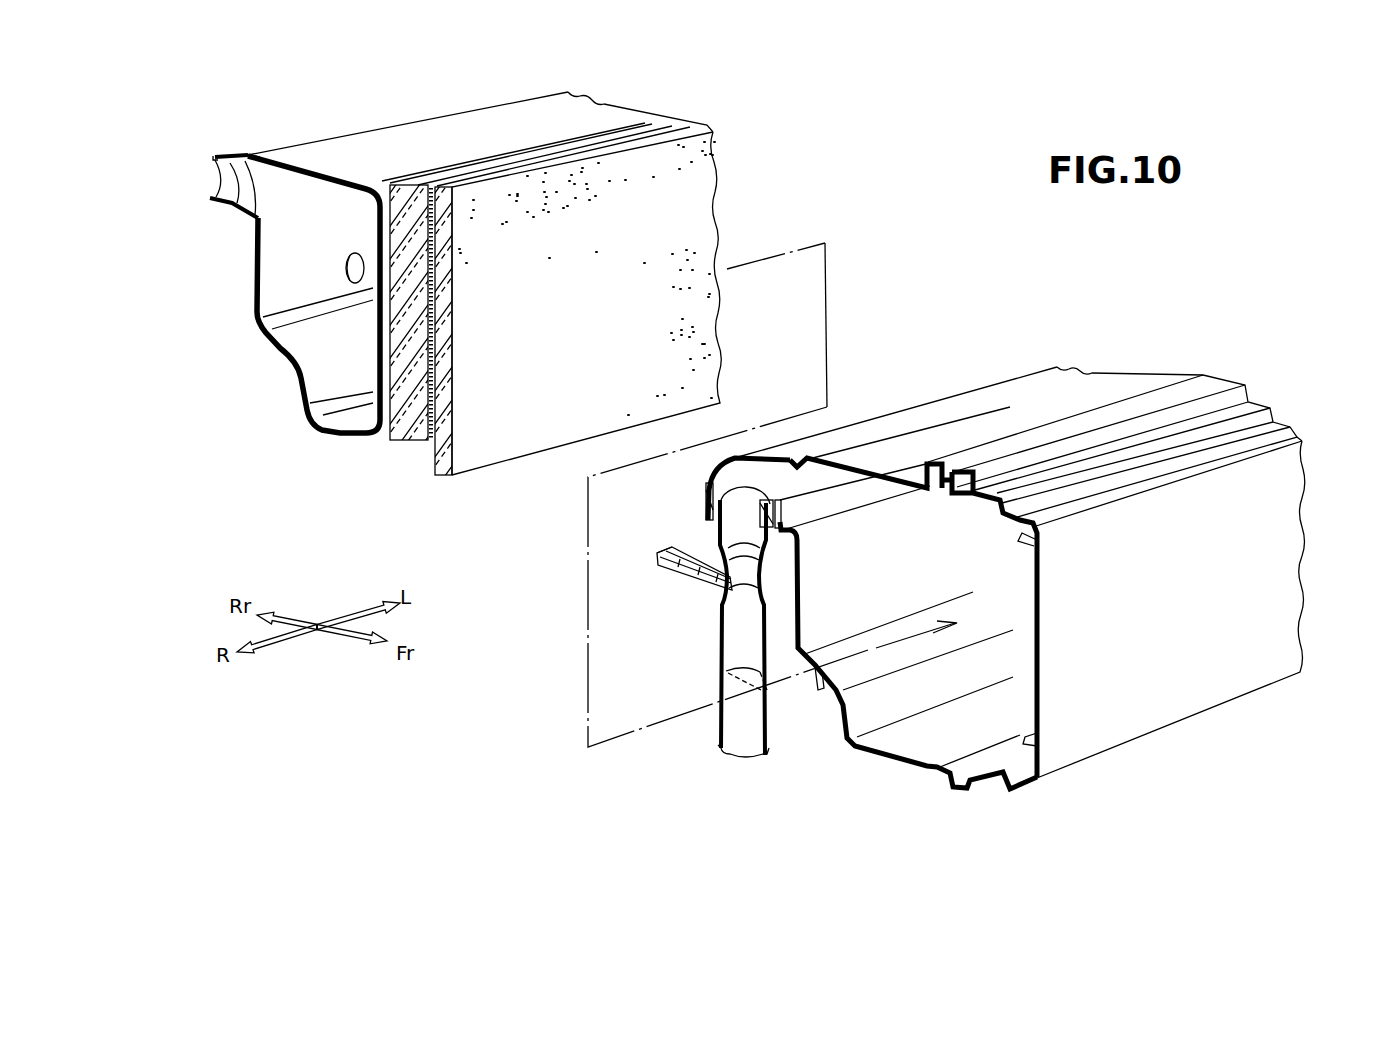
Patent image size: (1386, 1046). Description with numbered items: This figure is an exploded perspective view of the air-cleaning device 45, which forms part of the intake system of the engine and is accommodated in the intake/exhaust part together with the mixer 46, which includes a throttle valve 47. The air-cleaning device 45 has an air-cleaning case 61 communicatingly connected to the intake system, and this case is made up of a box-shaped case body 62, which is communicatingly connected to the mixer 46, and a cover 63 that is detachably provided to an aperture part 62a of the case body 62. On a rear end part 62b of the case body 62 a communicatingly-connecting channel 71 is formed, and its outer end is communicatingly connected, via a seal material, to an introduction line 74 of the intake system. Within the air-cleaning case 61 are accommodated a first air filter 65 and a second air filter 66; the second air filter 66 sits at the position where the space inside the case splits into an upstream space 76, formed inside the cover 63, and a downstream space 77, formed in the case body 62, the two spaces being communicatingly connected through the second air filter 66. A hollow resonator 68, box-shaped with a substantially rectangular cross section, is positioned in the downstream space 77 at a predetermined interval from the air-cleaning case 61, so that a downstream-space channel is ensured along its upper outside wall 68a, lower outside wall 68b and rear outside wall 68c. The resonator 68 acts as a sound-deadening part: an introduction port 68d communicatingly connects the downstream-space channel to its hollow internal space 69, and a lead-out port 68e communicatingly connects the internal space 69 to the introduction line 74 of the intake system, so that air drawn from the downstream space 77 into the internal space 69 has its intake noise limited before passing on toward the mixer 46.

The air-cleaning device 45 is at (914, 148).
The mixer 46 is at (718, 588).
The throttle valve 47 is at (720, 690).
The air-cleaning case 61 is at (1180, 331).
The case body 62 is at (1025, 408).
The aperture part 62a is at (973, 755).
The rear end part 62b is at (805, 448).
The cover 63 is at (1137, 447).
The first air filter 65 is at (697, 199).
The second air filter 66 is at (435, 326).
The hollow resonator 68 is at (487, 128).
The upper outside wall 68a is at (389, 148).
The lower outside wall 68b is at (337, 434).
The rear outside wall 68c is at (280, 349).
The introduction port 68d is at (350, 256).
The lead-out port 68e is at (237, 155).
The internal space 69 is at (313, 287).
The communicatingly-connecting channel 71 is at (737, 480).
The introduction line 74 is at (720, 632).
The upstream space 76 is at (1008, 618).
The downstream space 77 is at (866, 577).